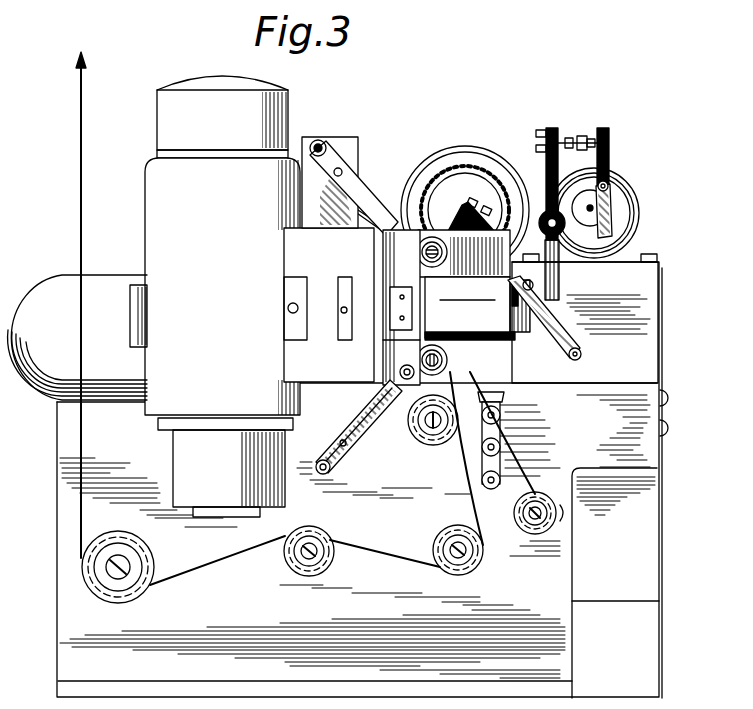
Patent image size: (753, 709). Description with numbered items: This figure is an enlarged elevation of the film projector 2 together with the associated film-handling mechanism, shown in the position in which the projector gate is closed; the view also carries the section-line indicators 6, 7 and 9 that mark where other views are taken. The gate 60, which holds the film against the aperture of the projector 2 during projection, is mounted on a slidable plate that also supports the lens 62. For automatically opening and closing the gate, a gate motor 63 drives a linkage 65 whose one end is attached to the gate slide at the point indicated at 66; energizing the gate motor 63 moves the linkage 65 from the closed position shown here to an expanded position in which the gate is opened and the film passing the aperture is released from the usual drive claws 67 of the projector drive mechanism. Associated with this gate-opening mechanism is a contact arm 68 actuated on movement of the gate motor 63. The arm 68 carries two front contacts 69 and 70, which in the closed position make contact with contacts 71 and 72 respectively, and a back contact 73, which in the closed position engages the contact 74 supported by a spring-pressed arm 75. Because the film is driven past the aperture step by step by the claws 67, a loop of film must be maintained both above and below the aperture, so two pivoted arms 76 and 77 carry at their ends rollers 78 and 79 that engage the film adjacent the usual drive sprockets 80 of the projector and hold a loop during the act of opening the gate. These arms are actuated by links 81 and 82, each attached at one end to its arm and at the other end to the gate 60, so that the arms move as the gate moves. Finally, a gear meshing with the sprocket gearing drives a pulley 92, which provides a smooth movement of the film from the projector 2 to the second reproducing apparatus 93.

The film projector 2 is at (152, 216).
The section line 6- 6 is at (444, 42).
The section line 7- 7 is at (386, 145).
The section line 9- 9 is at (542, 215).
The gate 60 is at (392, 298).
The lens 62 is at (470, 308).
The gate motor 63 is at (622, 195).
The linkage 65 is at (562, 292).
The attachment of linkage to gate slide 66 is at (520, 318).
The drive claws 67 is at (390, 318).
The arm 68 is at (551, 126).
The front contact 69 is at (536, 149).
The front contact 70 is at (537, 132).
The contact 71 is at (462, 200).
The contact 72 is at (488, 205).
The back contact 73 is at (574, 137).
The contact 74 is at (588, 139).
The spring-pressed arm 75 is at (612, 129).
The pivoted arm 76 is at (330, 147).
The pivoted arm 77 is at (332, 472).
The roller 78 is at (399, 249).
The roller 79 is at (404, 380).
The drive sprockets 80 is at (447, 253).
The link 81 is at (356, 215).
The link 82 is at (356, 414).
The pulley 92 is at (440, 444).
The second reproducing apparatus 93 is at (565, 500).